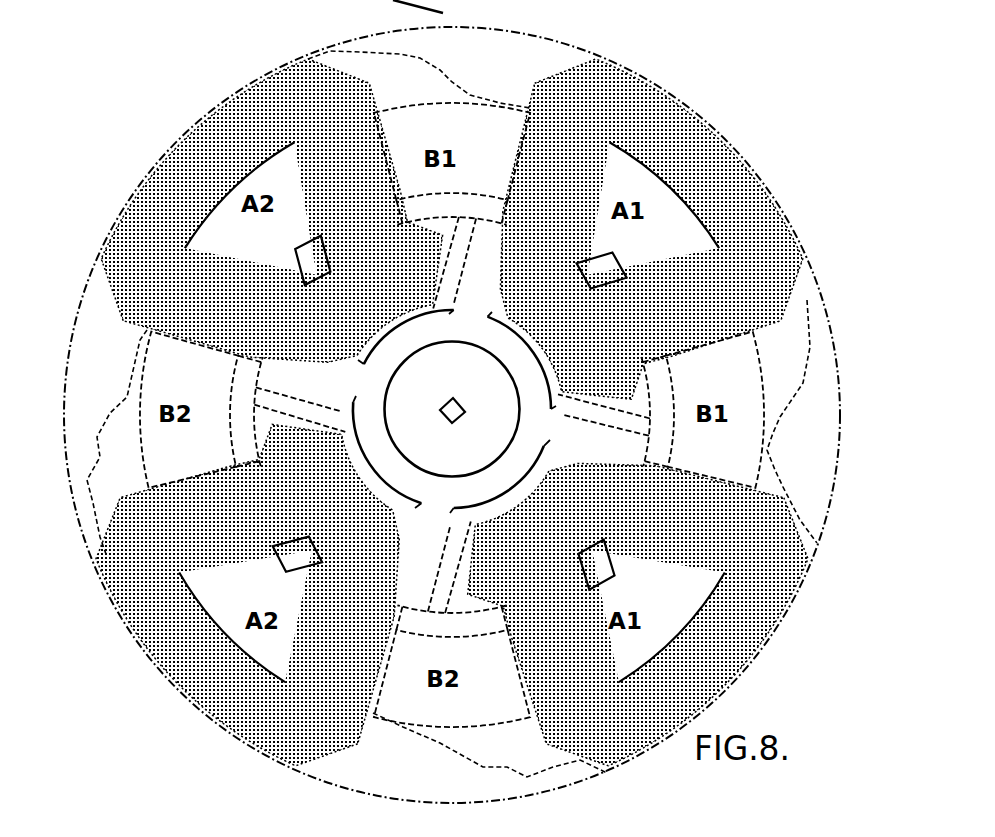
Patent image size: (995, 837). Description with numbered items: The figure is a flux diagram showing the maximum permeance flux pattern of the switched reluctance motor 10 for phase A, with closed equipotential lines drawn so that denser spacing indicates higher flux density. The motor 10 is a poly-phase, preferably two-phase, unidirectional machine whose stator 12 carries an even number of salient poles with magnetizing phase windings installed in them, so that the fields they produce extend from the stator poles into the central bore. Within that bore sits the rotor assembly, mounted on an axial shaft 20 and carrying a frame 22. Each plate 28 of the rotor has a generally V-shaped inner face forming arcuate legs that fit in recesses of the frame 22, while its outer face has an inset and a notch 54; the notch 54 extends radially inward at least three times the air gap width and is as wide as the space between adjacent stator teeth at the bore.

The switched reluctance motor 10 is at (697, 92).
The stator 12 is at (542, 34).
The axial shaft 20 is at (447, 387).
The frame 22 is at (518, 392).
The plate 28 is at (447, 316).
The notch 54 is at (312, 282).